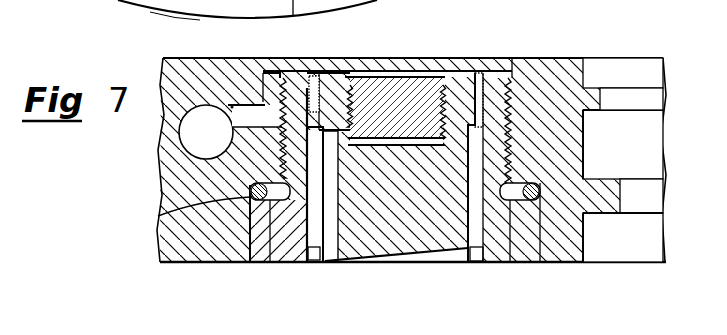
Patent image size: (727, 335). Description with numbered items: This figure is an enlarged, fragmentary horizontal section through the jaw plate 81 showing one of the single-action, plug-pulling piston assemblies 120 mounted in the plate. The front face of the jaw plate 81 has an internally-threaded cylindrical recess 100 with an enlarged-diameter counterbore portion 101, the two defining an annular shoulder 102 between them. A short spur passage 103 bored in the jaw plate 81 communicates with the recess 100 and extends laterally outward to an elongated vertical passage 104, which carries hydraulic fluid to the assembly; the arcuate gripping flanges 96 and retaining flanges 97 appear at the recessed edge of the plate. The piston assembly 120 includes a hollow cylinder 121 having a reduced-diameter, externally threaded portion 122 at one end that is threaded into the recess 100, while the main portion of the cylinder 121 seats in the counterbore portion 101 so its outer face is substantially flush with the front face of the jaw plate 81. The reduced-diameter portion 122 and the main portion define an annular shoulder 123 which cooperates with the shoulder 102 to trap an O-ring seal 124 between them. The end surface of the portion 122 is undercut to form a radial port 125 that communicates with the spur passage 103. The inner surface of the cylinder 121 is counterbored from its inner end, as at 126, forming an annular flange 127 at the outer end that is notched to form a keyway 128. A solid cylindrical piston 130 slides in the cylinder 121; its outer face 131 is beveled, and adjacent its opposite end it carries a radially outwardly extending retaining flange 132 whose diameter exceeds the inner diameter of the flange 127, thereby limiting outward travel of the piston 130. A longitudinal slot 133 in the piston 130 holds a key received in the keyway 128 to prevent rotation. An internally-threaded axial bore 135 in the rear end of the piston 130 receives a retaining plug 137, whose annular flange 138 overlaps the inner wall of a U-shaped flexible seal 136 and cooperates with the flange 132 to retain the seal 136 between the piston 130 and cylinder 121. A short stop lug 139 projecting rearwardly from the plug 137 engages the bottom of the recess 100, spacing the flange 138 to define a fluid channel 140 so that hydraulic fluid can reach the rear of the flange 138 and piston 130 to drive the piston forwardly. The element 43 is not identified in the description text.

The handle 43 is at (247, 23).
The jaw plate 81 is at (170, 192).
The gripping flange 96 is at (610, 208).
The retaining flange 97 is at (593, 88).
The recess 100 is at (505, 87).
The counterbore portion 101 is at (538, 252).
The annular shoulder 102 is at (513, 184).
The spur passage 103 is at (263, 103).
The vertical passage 104 is at (187, 133).
The piston assembly 120 is at (212, 280).
The hollow cylinder 121 is at (508, 253).
The reduced-diameter externally threaded portion 122 is at (232, 105).
The annular shoulder 123 is at (270, 262).
The O-ring seal 124 is at (183, 221).
The radial port 125 is at (281, 112).
The counterbore 126 is at (464, 247).
The annular flange 127 is at (478, 258).
The keyway 128 is at (315, 263).
The piston 130 is at (390, 236).
The outer face 131 is at (372, 262).
The retaining flange 132 is at (283, 143).
The slot 133 is at (333, 250).
The axial bore 135 is at (433, 92).
The flexible seal 136 is at (480, 73).
The retaining plug 137 is at (415, 83).
The annular flange 138 is at (326, 72).
The stop lug 139 is at (392, 71).
The fluid channel 140 is at (358, 72).